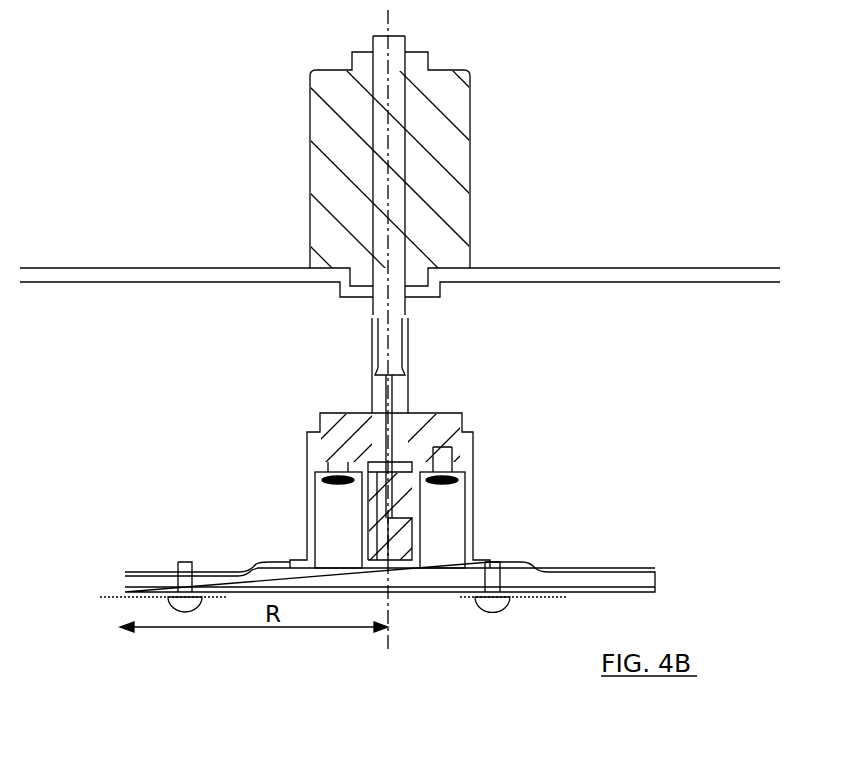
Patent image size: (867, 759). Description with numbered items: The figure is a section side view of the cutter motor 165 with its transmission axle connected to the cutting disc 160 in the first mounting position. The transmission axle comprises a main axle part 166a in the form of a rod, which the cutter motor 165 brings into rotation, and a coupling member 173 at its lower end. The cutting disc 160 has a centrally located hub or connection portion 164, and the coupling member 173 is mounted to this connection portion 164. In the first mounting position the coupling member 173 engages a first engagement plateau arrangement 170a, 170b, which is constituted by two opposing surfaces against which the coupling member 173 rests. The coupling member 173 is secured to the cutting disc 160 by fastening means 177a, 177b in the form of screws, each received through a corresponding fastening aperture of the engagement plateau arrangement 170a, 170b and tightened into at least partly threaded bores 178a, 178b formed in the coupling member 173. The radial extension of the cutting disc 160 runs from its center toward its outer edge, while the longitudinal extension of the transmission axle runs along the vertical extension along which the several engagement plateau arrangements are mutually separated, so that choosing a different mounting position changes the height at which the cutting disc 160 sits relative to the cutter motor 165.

The cutter motor 165 is at (328, 160).
The main axle part 166a is at (398, 101).
The coupling member 173 is at (352, 358).
The connection portion 164 is at (307, 493).
The fastening means 177a is at (332, 478).
The fastening means 177b is at (443, 480).
The at least partly threaded bore 178a is at (333, 458).
The at least partly threaded bore 178b is at (440, 432).
The engagement plateau arrangement 170a is at (341, 432).
The engagement plateau arrangement 170b is at (428, 445).
The cutting disc 160 is at (262, 562).